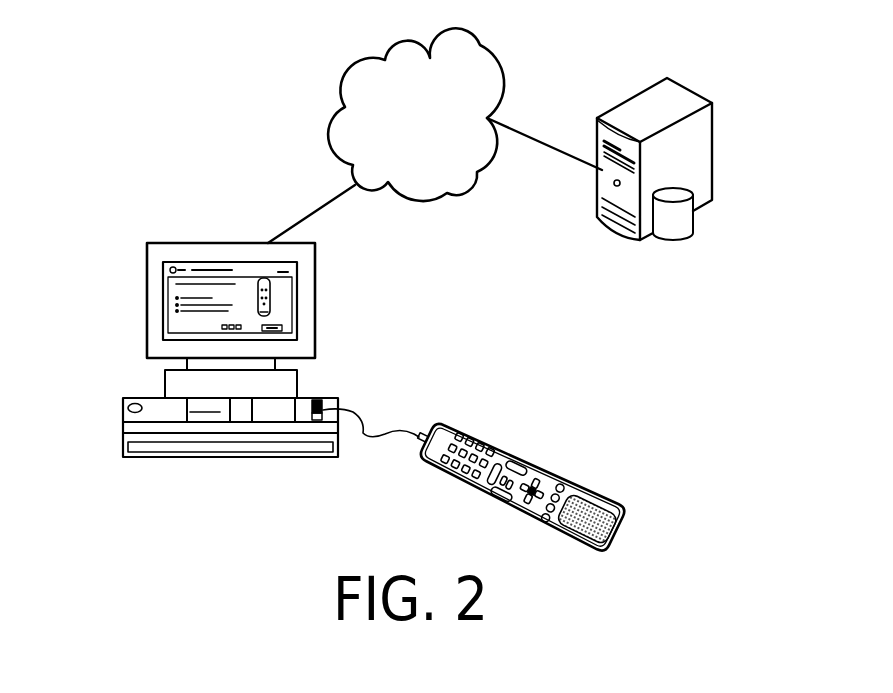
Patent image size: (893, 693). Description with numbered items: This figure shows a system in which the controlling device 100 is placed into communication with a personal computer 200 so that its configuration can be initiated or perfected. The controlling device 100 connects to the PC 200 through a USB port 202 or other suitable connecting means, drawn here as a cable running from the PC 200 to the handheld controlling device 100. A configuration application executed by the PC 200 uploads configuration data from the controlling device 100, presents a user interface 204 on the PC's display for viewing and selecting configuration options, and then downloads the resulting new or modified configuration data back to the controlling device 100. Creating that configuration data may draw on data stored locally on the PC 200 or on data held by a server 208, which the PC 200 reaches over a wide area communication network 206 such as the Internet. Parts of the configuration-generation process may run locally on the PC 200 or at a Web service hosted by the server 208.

The controlling device 100 is at (512, 452).
The personal computer 200 is at (145, 398).
The USB port 202 is at (320, 402).
The user interface 204 is at (205, 298).
The wide area communication network 206 is at (375, 55).
The server 208 is at (713, 157).